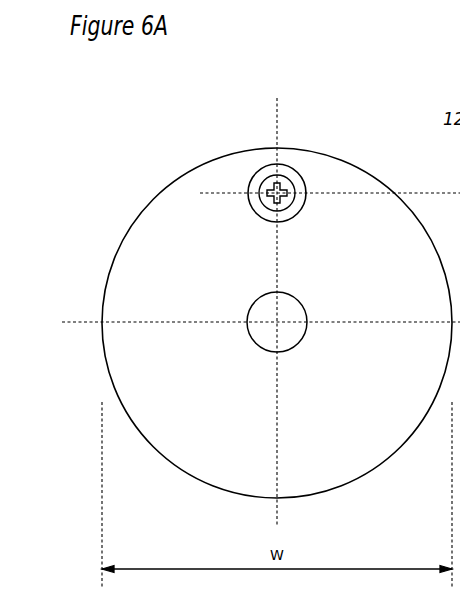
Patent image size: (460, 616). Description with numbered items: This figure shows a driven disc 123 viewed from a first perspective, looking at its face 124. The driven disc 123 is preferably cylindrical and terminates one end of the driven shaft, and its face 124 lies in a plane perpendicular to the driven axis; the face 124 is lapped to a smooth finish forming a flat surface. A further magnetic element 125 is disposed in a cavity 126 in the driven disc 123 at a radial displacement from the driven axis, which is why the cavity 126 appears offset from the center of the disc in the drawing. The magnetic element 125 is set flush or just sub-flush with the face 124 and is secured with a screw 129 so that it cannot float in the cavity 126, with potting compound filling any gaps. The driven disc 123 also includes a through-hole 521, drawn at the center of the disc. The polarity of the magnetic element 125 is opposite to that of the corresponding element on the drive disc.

The driven disc 123 is at (158, 212).
The face 124 is at (153, 284).
The further magnetic element 125 is at (290, 176).
The cavity 126 is at (306, 188).
The screw 129 is at (262, 189).
The through-hole 521 is at (258, 336).